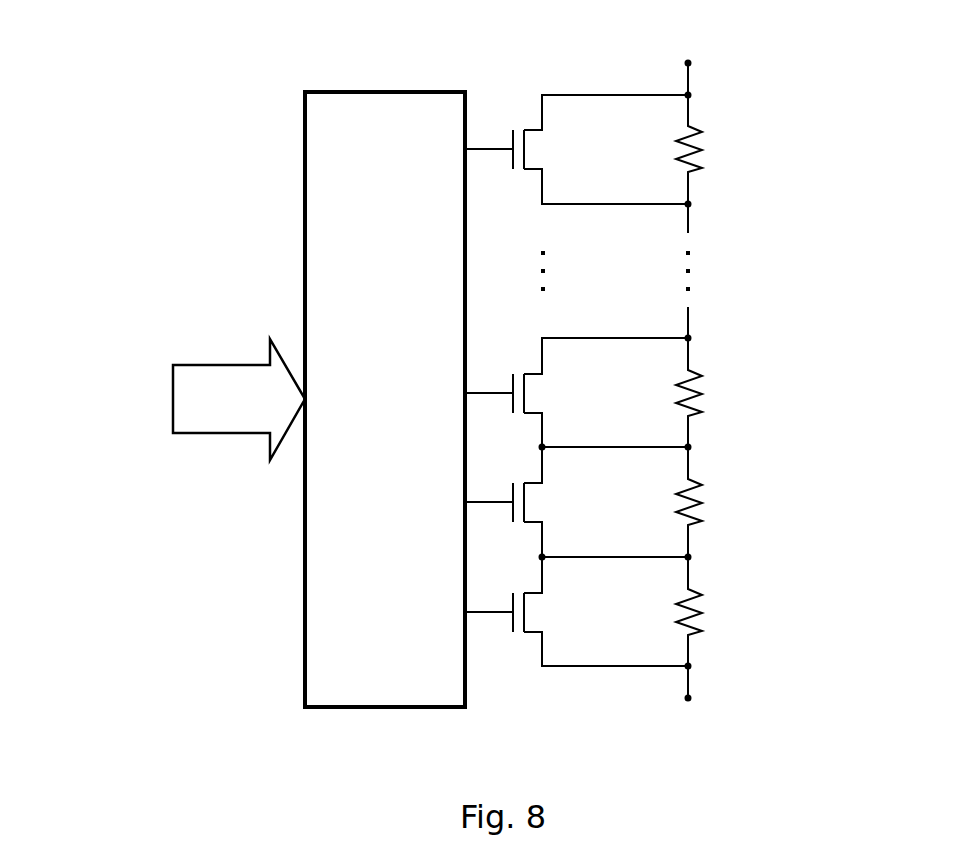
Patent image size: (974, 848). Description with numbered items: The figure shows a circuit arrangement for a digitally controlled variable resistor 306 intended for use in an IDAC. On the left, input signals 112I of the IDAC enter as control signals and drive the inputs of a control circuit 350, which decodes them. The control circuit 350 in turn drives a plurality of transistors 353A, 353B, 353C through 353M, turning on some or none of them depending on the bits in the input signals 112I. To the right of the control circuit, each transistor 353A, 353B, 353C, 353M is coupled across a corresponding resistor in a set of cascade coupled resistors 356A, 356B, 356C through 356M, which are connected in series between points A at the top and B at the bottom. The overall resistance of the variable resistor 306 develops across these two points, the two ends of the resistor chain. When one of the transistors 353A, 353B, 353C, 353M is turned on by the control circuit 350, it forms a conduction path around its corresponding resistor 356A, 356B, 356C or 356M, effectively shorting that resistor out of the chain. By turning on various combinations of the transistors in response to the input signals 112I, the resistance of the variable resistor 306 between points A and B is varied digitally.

The variable resistor 306 is at (886, 93).
The control circuit 350 is at (386, 708).
The input signals 112I is at (218, 433).
The transistor 353A is at (540, 632).
The transistor 353B is at (540, 522).
The transistor 353C is at (540, 413).
The transistor 353M is at (540, 169).
The resistor 356A is at (700, 611).
The resistor 356B is at (700, 501).
The resistor 356C is at (700, 392).
The resistor 356M is at (700, 148).